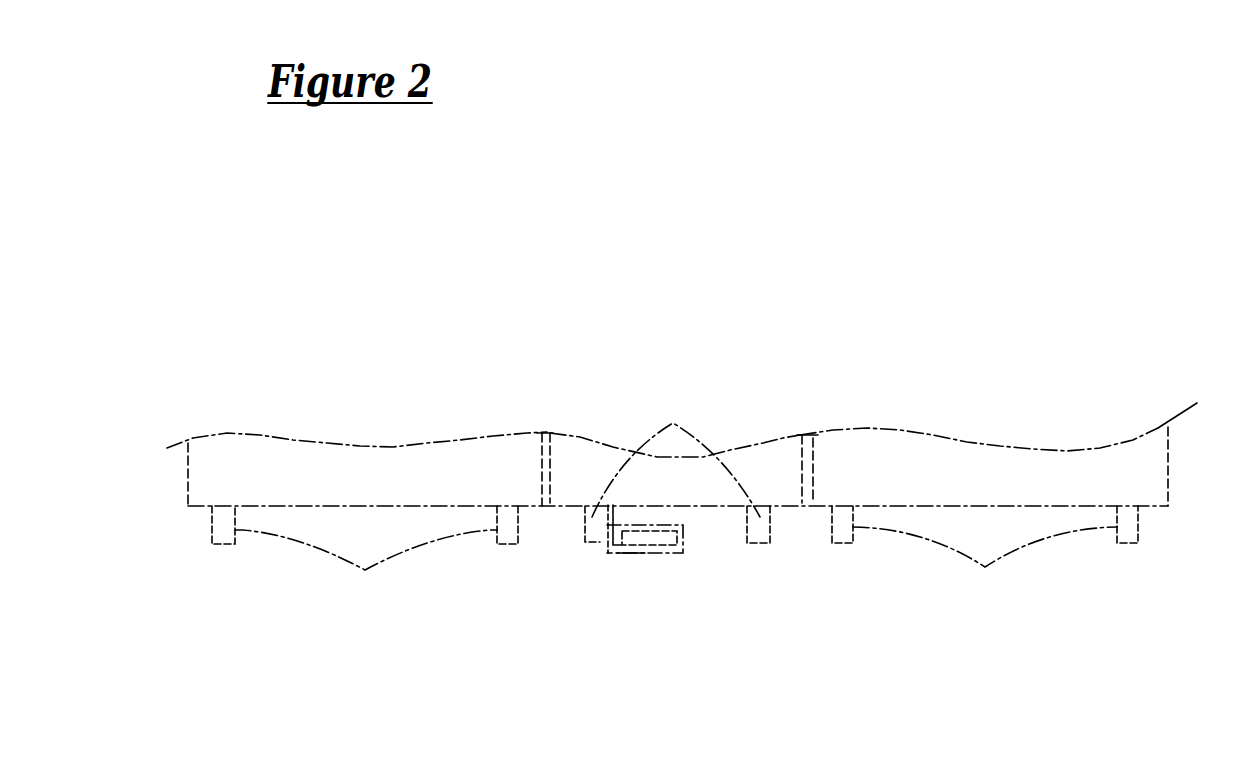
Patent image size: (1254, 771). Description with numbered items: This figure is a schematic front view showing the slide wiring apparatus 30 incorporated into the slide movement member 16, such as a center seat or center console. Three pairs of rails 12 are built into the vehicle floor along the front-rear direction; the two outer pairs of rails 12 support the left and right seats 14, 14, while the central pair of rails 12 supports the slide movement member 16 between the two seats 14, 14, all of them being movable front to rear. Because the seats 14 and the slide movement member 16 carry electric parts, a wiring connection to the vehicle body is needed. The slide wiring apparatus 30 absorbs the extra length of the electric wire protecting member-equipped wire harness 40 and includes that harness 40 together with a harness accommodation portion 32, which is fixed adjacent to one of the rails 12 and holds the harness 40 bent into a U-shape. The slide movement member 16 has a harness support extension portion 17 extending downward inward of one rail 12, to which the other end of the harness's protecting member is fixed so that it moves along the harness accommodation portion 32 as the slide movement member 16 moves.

The rails 12 is at (670, 410).
The seats 14 is at (252, 452).
The slide movement member 16 is at (577, 452).
The harness support extension portion 17 is at (618, 553).
The slide wiring apparatus 30 is at (669, 592).
The harness accommodation portion 32 is at (687, 545).
The electric wire protecting member-equipped wire harness 40 is at (643, 553).